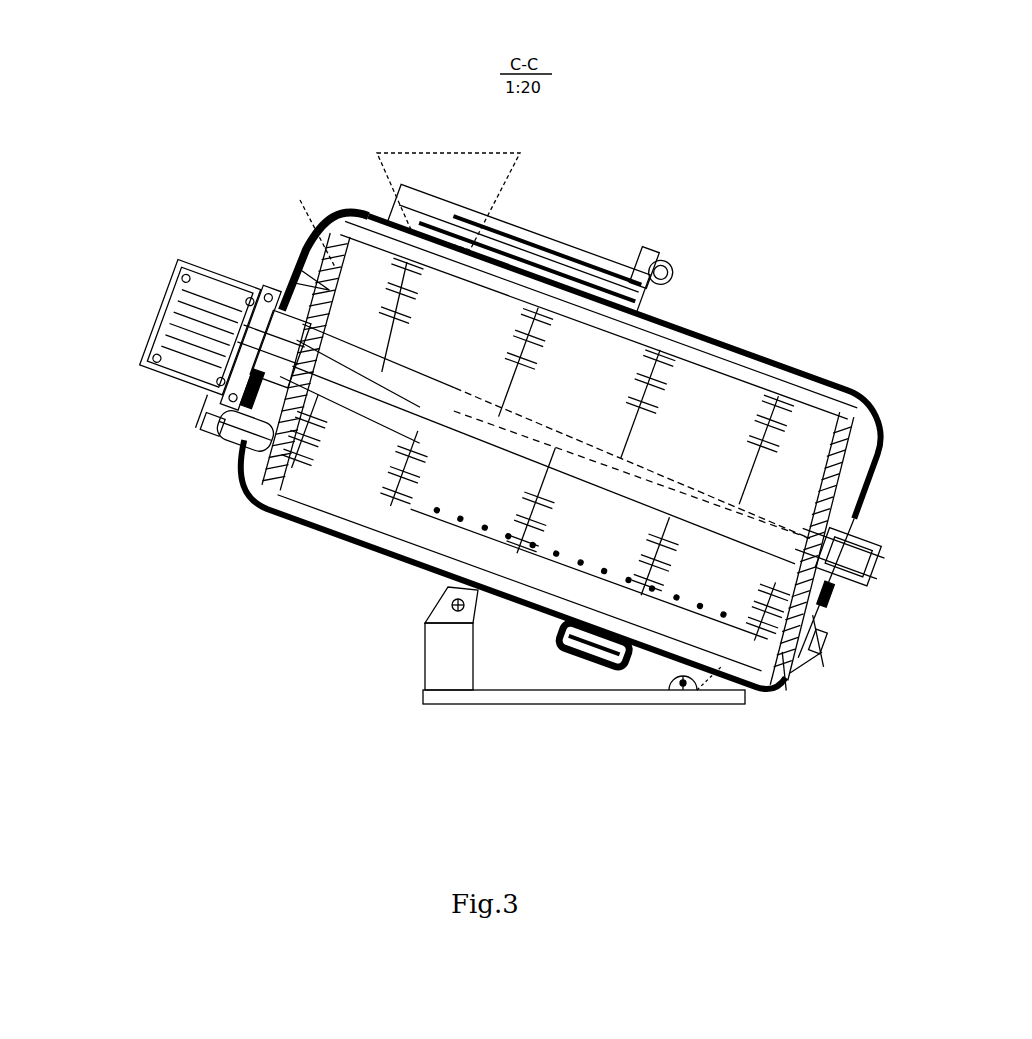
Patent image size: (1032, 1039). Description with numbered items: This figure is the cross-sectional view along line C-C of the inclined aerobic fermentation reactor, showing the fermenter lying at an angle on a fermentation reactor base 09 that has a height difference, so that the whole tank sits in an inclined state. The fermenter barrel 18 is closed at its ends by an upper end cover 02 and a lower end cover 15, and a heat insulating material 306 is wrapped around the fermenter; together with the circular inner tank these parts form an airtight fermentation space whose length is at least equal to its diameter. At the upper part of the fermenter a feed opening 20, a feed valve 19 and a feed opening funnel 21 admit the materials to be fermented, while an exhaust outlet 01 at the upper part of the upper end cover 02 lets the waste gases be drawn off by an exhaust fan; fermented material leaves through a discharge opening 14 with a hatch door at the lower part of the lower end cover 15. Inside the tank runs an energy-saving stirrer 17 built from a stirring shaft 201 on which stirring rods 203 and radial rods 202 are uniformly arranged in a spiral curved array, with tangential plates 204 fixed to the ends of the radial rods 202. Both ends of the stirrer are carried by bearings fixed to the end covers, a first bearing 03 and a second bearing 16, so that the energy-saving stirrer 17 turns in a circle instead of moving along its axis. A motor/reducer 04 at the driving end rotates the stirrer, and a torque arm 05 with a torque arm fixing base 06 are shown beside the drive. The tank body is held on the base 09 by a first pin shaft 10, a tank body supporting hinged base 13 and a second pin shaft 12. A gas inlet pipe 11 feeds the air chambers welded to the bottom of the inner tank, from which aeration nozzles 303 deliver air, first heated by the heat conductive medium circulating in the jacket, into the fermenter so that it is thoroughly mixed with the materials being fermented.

The exhaust outlet 01 is at (300, 245).
The upper end cover 02 is at (295, 285).
The first bearing 03 is at (265, 300).
The motor/reducer 04 is at (197, 340).
The torque arm 05 is at (230, 398).
The torque arm fixing base 06 is at (227, 433).
The stirring shaft 201 is at (403, 417).
The radial rod 202 is at (420, 443).
The stirring rod 203 is at (432, 470).
The tangential plate 204 is at (420, 522).
The heat insulating material 306 is at (420, 572).
The fermentation reactor base 09 is at (480, 698).
The first pin shaft 10 is at (463, 603).
The gas inlet pipe 11 is at (607, 657).
The second pin shaft 12 is at (690, 693).
The tank body supporting hinged base 13 is at (725, 613).
The aeration nozzle 303 is at (797, 652).
The discharge opening 14 is at (815, 650).
The lower end cover 15 is at (812, 594).
The second bearing 16 is at (853, 570).
The energy-saving stirrer 17 is at (807, 533).
The fermenter barrel 18 is at (800, 380).
The feed valve 19 is at (633, 273).
The feed opening 20 is at (480, 223).
The feed opening funnel 21 is at (440, 170).